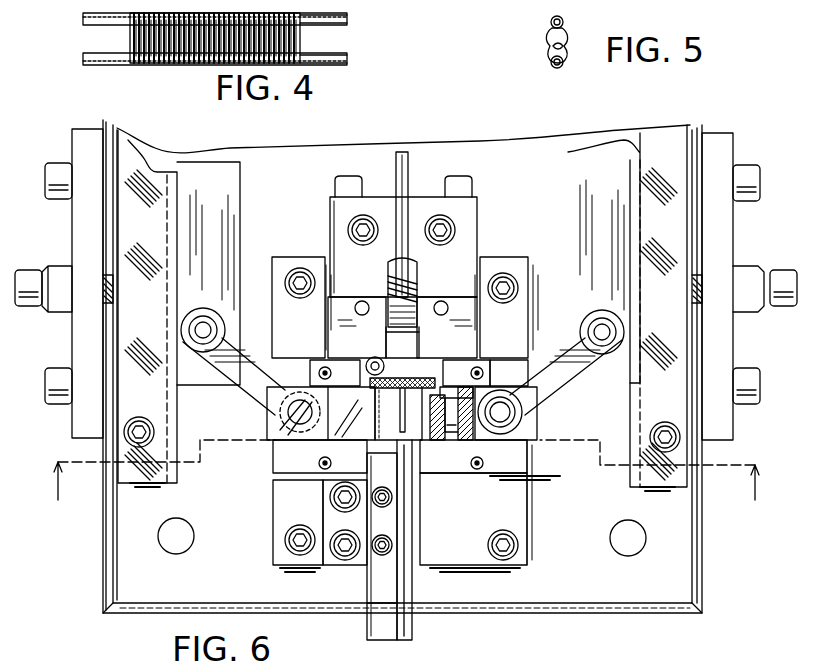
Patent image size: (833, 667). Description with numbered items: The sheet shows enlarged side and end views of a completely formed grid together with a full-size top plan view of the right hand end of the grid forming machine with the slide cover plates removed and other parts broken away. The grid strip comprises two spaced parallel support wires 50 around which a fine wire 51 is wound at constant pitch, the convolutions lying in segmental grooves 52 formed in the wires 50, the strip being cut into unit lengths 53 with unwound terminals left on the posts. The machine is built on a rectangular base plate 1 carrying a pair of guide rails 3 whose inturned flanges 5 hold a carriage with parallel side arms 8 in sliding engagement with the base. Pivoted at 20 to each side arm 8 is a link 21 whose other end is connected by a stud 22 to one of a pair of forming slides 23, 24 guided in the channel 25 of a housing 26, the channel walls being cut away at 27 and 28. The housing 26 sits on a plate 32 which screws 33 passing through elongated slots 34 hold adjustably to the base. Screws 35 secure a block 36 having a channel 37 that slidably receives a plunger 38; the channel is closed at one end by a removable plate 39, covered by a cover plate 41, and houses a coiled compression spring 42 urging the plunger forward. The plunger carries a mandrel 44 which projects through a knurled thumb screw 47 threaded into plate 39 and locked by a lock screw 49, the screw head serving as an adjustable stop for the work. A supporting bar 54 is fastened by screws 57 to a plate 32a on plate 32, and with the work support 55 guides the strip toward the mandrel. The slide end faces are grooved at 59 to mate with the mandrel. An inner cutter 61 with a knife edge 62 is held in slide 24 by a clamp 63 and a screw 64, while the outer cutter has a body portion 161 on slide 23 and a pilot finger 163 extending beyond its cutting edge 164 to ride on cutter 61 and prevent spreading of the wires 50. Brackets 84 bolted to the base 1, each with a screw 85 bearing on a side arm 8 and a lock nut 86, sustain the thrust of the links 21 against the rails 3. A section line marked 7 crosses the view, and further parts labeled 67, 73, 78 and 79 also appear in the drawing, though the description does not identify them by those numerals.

In FIG. 6, the base plate 1 is at (490, 148).
In FIG. 6, the guide rails 3 is at (135, 165).
In FIG. 6, the inturned flanges 5 is at (180, 198).
In FIG. 6, the section line 7 is at (405, 490).
In FIG. 6, the side arms 8 is at (230, 205).
In FIG. 6, the pivot 20 is at (204, 322).
In FIG. 6, the link 21 is at (245, 395).
In FIG. 6, the stud 22 is at (268, 416).
In FIG. 6, the forming slide 23 is at (276, 425).
In FIG. 6, the forming slide 24 is at (540, 438).
In FIG. 6, the channel 25 is at (522, 448).
In FIG. 6, the housing 26 is at (490, 355).
In FIG. 6, the cut-away portion 27 is at (466, 373).
In FIG. 6, the cut-away portion 28 is at (420, 470).
In FIG. 6, the plate 32 is at (273, 528).
In FIG. 6, the plate 32a is at (273, 506).
In FIG. 6, the screws 33 is at (300, 268).
In FIG. 6, the elongated slots 34 is at (290, 270).
In FIG. 6, the screws 35 is at (472, 186).
In FIG. 6, the block 36 is at (325, 326).
In FIG. 6, the channel 37 is at (380, 304).
In FIG. 6, the plunger 38 is at (428, 310).
In FIG. 6, the removable plate 39 is at (430, 365).
In FIG. 6, the cover plate 41 is at (465, 248).
In FIG. 6, the coiled compression spring 42 is at (414, 287).
In FIG. 6, the mandrel 44 is at (335, 373).
In FIG. 6, the thumb screw 47 is at (400, 360).
In FIG. 6, the lock screw 49 is at (366, 362).
In FIG. 4, the support wires 50 is at (340, 52).
In FIG. 5, the support wires 50 is at (550, 22).
In FIG. 4, the fine wire 51 is at (128, 38).
In FIG. 5, the fine wire 51 is at (552, 46).
In FIG. 4, the segmental grooves 52 is at (345, 14).
In FIG. 4, the unit lengths 53 is at (190, 66).
In FIG. 5, the unit lengths 53 is at (567, 43).
In FIG. 6, the bar 54 is at (367, 620).
In FIG. 6, the work support 55 is at (412, 628).
In FIG. 6, the screws 57 is at (378, 556).
In FIG. 6, the groove 59 is at (428, 425).
In FIG. 6, the inner cutter 61 is at (470, 450).
In FIG. 6, the knife edge 62 is at (440, 458).
In FIG. 6, the clamp 63 is at (532, 490).
In FIG. 6, the screw 64 is at (509, 373).
In FIG. 6, the rod 67 is at (408, 186).
In FIG. 6, the sleeve 73 is at (388, 266).
In FIG. 6, the collar 78 is at (419, 312).
In FIG. 6, the hole 79 is at (338, 466).
In FIG. 6, the brackets 84 is at (76, 229).
In FIG. 6, the screw 85 is at (45, 305).
In FIG. 6, the lock nut 86 is at (63, 314).
In FIG. 6, the body portion 161 is at (318, 448).
In FIG. 6, the pilot finger 163 is at (398, 448).
In FIG. 6, the cutting edge 164 is at (321, 418).